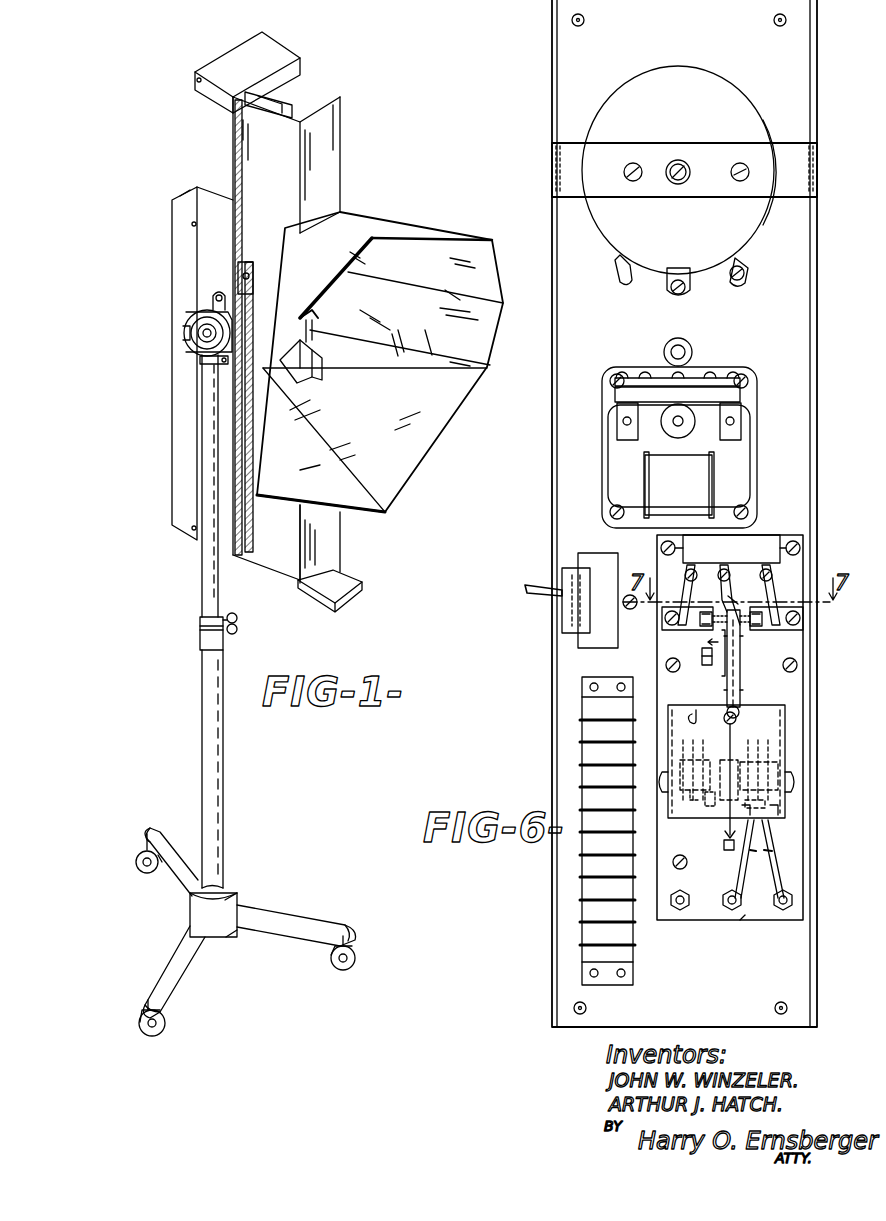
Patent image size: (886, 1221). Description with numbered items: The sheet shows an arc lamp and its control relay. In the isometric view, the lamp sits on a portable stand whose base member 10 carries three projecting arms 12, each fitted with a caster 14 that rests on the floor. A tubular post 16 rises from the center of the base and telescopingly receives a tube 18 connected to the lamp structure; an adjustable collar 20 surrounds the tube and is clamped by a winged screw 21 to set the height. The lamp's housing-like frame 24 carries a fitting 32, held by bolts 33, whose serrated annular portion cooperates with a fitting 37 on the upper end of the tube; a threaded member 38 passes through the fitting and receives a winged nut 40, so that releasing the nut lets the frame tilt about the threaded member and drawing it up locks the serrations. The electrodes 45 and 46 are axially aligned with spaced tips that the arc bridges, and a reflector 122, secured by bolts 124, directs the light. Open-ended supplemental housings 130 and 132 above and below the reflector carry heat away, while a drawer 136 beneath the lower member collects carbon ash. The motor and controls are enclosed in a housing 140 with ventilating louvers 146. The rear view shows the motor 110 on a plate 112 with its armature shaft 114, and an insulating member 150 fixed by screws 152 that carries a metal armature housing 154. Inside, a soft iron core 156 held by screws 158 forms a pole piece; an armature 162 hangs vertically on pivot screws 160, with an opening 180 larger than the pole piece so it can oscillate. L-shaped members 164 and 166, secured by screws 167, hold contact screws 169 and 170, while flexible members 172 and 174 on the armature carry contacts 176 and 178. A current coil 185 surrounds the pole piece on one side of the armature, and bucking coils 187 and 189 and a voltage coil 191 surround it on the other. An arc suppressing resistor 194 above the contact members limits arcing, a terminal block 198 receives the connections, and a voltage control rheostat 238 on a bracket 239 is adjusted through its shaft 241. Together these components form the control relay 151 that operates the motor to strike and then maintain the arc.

In FIG. 1, the base member 10 is at (190, 906).
In FIG. 1, the projecting arms 12 is at (178, 954).
In FIG. 1, the caster 14 is at (140, 1026).
In FIG. 1, the tubular post 16 is at (206, 705).
In FIG. 1, the tube 18 is at (204, 574).
In FIG. 1, the adjustable collar 20 is at (200, 621).
In FIG. 1, the winged screw 21 is at (237, 619).
In FIG. 1, the housing-like frame 24 is at (284, 47).
In FIG. 1, the fitting 32 is at (213, 298).
In FIG. 1, the bolts 33 is at (205, 313).
In FIG. 1, the fitting 37 is at (200, 358).
In FIG. 1, the threaded member 38 is at (185, 345).
In FIG. 1, the winged nut 40 is at (184, 330).
In FIG. 1, the electrode 45 is at (316, 317).
In FIG. 1, the electrode 46 is at (314, 378).
In FIG. 6, the motor 110 is at (613, 361).
In FIG. 6, the plate 112 is at (756, 398).
In FIG. 6, the armature shaft 114 is at (668, 430).
In FIG. 1, the reflector 122 is at (393, 213).
In FIG. 1, the bolts 124 is at (250, 275).
In FIG. 1, the supplemental housing 130 is at (340, 145).
In FIG. 1, the supplemental housing 132 is at (343, 538).
In FIG. 1, the drawer 136 is at (308, 596).
In FIG. 1, the housing 140 is at (172, 473).
In FIG. 1, the ventilating louvers 146 is at (186, 193).
In FIG. 6, the insulating member 150 is at (796, 856).
In FIG. 6, the control relay 151 is at (741, 921).
In FIG. 6, the screws 152 is at (666, 666).
In FIG. 6, the armature housing 154 is at (786, 714).
In FIG. 6, the core 156 is at (785, 770).
In FIG. 6, the screws 158 is at (664, 784).
In FIG. 6, the pivot screws 160 is at (734, 724).
In FIG. 6, the armature 162 is at (741, 701).
In FIG. 6, the L-shaped member 164 is at (673, 606).
In FIG. 6, the L-shaped member 166 is at (762, 632).
In FIG. 6, the screws 167 is at (666, 622).
In FIG. 6, the contact screw 169 is at (699, 640).
In FIG. 6, the contact screw 170 is at (770, 600).
In FIG. 6, the flexible member 172 is at (726, 678).
In FIG. 6, the flexible member 174 is at (740, 676).
In FIG. 6, the contact 176 is at (726, 605).
In FIG. 6, the contact 178 is at (733, 590).
In FIG. 6, the opening 180 is at (738, 762).
In FIG. 6, the current coil 185 is at (790, 811).
In FIG. 6, the bucking coil 187 is at (708, 795).
In FIG. 6, the bucking coil 189 is at (696, 794).
In FIG. 6, the voltage coil 191 is at (684, 792).
In FIG. 6, the arc suppressing resistor 194 is at (753, 546).
In FIG. 6, the terminal block 198 is at (588, 767).
In FIG. 6, the voltage control rheostat 238 is at (706, 72).
In FIG. 6, the bracket 239 is at (782, 181).
In FIG. 6, the shaft 241 is at (681, 164).